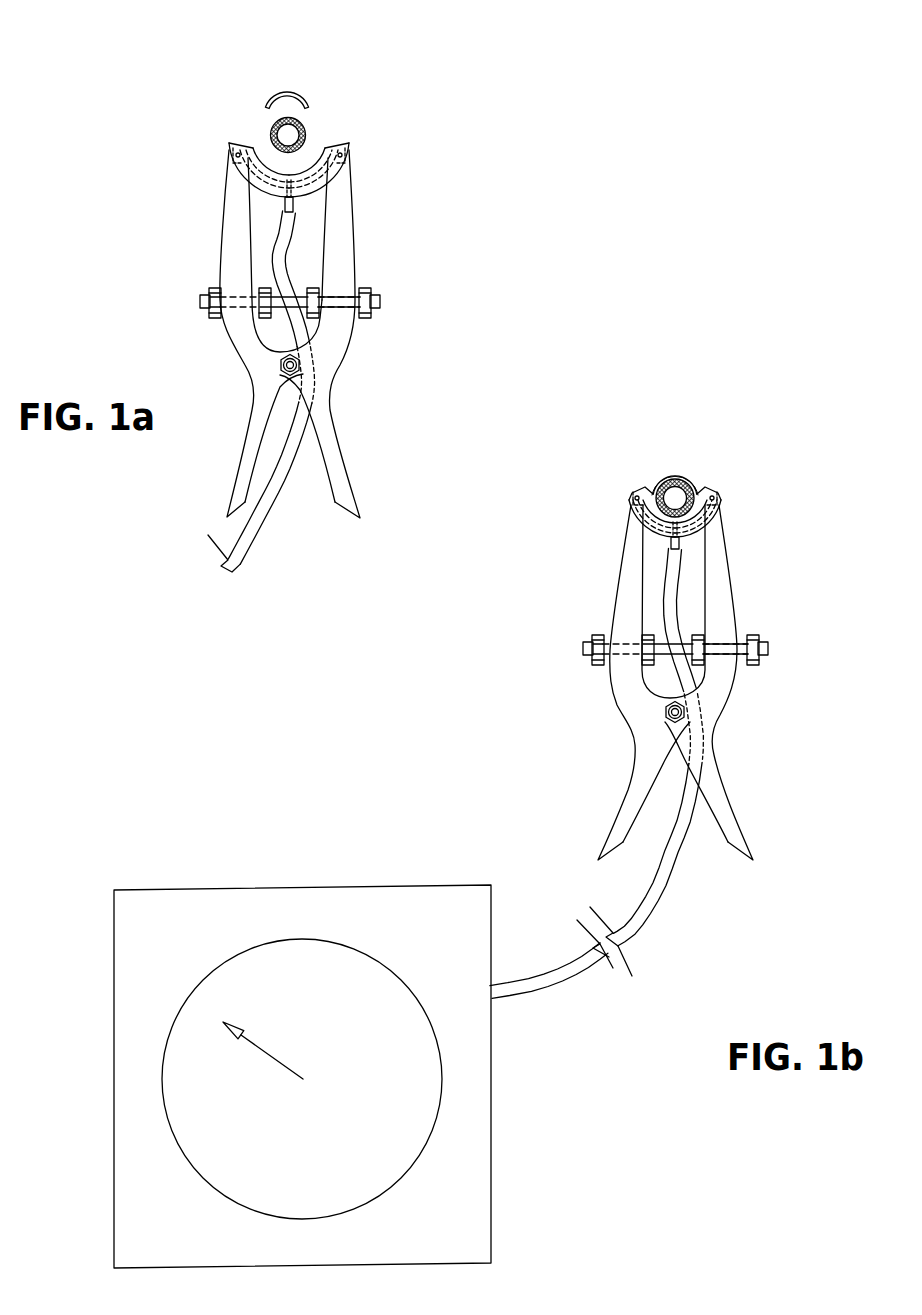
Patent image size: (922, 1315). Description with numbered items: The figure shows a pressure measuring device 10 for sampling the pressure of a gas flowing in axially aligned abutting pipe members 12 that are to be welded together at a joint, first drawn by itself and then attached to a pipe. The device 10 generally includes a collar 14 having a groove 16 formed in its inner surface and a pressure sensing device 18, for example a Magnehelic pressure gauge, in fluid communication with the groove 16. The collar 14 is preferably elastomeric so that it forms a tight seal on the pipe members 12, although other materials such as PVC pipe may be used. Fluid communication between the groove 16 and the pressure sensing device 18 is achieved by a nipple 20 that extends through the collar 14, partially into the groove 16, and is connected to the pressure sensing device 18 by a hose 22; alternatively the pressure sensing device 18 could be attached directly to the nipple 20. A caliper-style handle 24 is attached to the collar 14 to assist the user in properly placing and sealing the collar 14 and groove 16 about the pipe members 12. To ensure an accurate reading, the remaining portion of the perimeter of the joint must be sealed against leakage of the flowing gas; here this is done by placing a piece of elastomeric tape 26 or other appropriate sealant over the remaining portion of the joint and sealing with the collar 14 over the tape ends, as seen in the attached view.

In FIG. 1a, the pressure measuring device 10 is at (362, 110).
In FIG. 1b, the pressure measuring device 10 is at (737, 468).
In FIG. 1a, the pipe members 12 is at (274, 122).
In FIG. 1b, the pipe members 12 is at (661, 490).
In FIG. 1a, the collar 14 is at (237, 143).
In FIG. 1b, the collar 14 is at (644, 486).
In FIG. 1a, the groove 16 is at (317, 153).
In FIG. 1b, the groove 16 is at (697, 488).
In FIG. 1b, the pressure sensing device 18 is at (491, 1113).
In FIG. 1a, the nipple 20 is at (300, 212).
In FIG. 1b, the nipple 20 is at (680, 547).
In FIG. 1a, the hose 22 is at (280, 507).
In FIG. 1b, the hose 22 is at (655, 893).
In FIG. 1a, the handle 24 is at (358, 270).
In FIG. 1b, the handle 24 is at (730, 575).
In FIG. 1a, the elastomeric tape 26 is at (294, 91).
In FIG. 1b, the elastomeric tape 26 is at (678, 477).